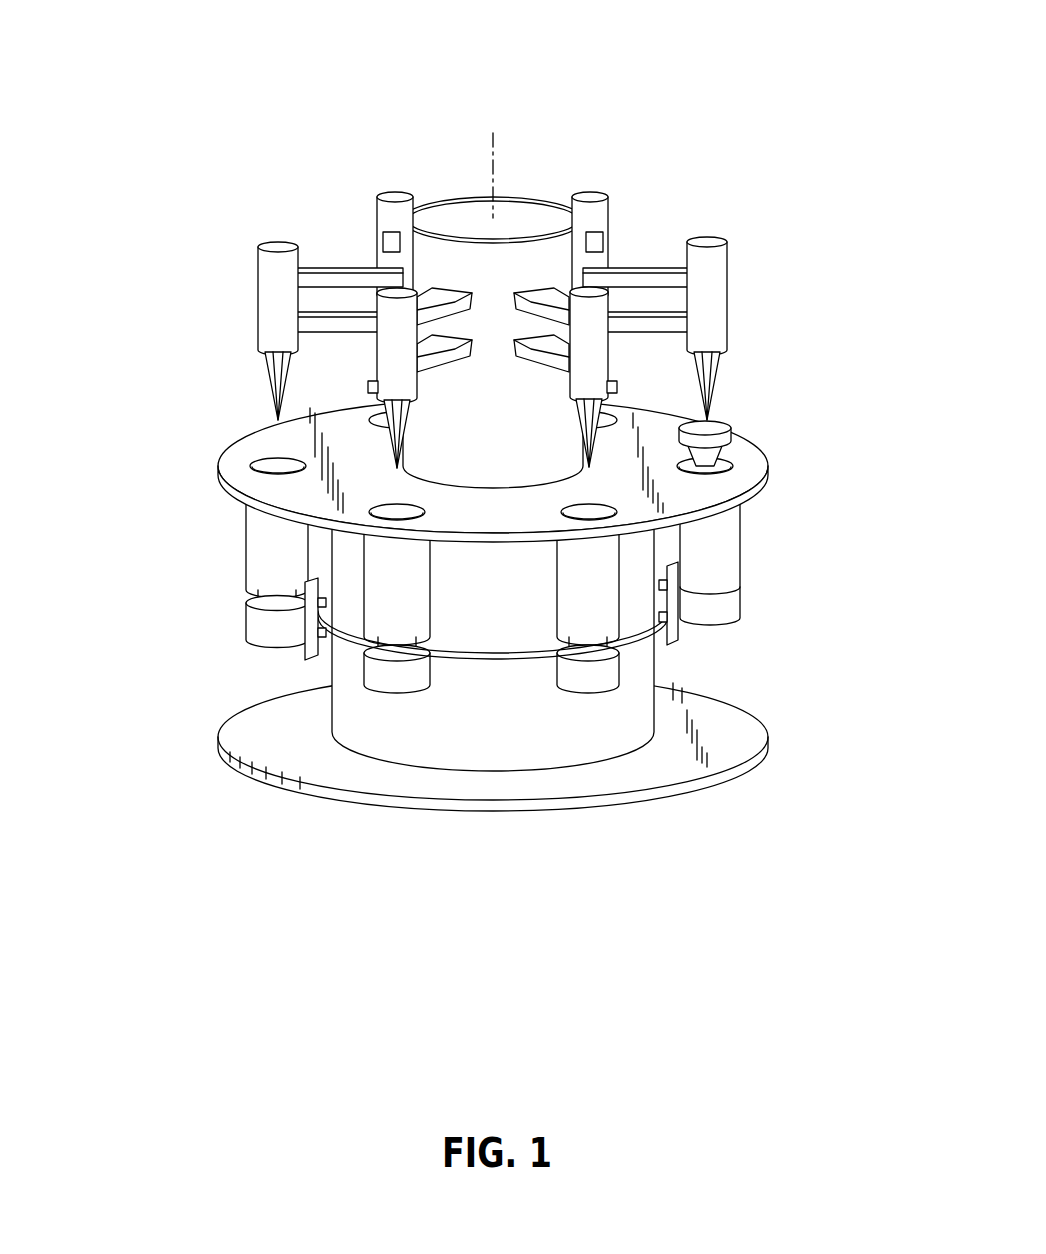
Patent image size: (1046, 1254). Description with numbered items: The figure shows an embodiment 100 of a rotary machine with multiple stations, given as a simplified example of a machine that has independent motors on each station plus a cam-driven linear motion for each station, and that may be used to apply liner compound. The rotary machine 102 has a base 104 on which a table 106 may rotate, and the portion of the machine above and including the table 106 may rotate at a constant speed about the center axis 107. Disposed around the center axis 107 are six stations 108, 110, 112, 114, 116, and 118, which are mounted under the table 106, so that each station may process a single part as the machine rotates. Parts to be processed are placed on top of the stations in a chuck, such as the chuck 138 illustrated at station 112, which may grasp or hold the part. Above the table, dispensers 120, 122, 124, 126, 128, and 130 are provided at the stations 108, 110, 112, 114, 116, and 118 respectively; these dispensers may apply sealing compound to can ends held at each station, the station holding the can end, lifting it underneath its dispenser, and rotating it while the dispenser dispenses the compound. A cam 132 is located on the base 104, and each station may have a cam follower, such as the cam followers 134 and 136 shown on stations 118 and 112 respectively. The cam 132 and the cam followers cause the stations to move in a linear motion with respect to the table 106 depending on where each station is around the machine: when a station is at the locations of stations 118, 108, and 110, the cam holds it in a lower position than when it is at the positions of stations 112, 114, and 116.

The embodiment 100 is at (499, 537).
The rotary machine 102 is at (493, 698).
The base 104 is at (357, 802).
The table 106 is at (767, 465).
The center axis 107 is at (515, 111).
The station 108 is at (358, 632).
The station 110 is at (610, 606).
The station 112 is at (740, 543).
The station 114 is at (700, 393).
The station 116 is at (358, 393).
The station 118 is at (257, 555).
The dispenser 120 is at (397, 292).
The dispenser 122 is at (610, 290).
The dispenser 124 is at (727, 285).
The dispenser 126 is at (597, 197).
The dispenser 128 is at (397, 197).
The dispenser 130 is at (258, 262).
The cam 132 is at (505, 663).
The cam follower 134 is at (305, 650).
The cam follower 136 is at (680, 628).
The chuck 138 is at (735, 430).